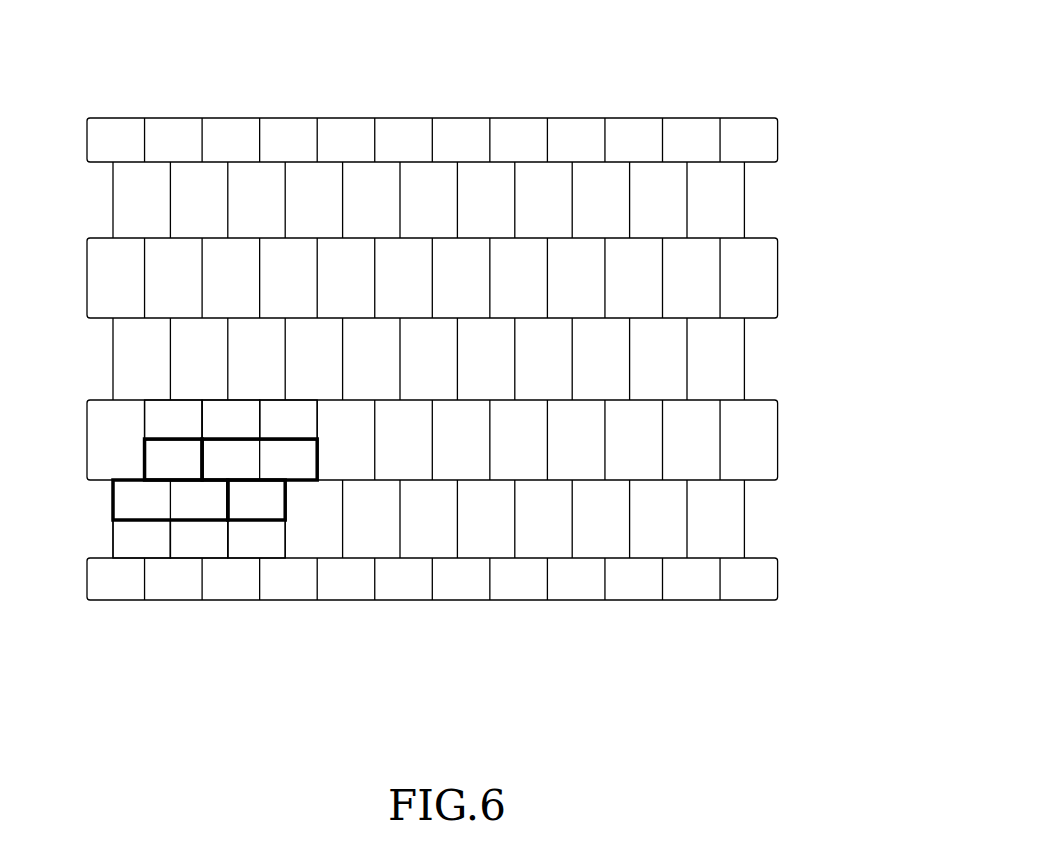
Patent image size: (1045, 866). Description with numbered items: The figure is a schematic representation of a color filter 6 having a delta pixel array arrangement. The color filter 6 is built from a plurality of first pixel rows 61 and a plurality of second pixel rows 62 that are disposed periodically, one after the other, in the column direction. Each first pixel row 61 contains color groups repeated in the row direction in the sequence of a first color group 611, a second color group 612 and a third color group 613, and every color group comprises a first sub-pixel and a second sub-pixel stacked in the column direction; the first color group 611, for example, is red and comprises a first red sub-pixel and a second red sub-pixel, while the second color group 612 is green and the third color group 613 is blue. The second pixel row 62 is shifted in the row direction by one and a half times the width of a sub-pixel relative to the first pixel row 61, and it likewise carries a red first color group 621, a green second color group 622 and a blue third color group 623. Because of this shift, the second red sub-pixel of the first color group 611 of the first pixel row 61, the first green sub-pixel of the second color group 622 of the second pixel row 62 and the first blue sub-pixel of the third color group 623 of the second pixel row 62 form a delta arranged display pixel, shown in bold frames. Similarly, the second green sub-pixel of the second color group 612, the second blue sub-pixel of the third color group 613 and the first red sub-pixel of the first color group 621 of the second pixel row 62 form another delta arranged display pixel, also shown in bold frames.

The color filter 6 is at (440, 344).
The first pixel row 61 is at (440, 404).
The second pixel row 62 is at (481, 572).
The first color group 611 is at (155, 427).
The second color group 612 is at (212, 408).
The third color group 613 is at (275, 408).
The first color group 621 is at (272, 550).
The second color group 622 is at (130, 550).
The third color group 623 is at (212, 550).